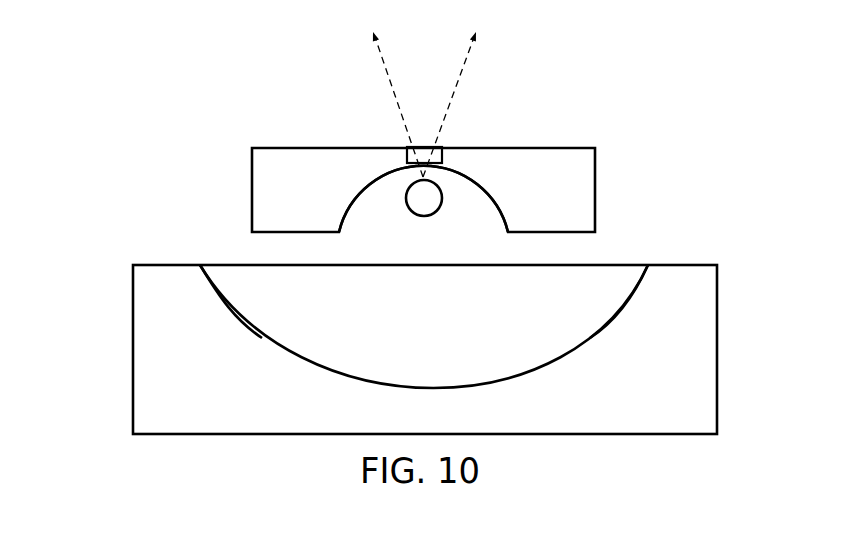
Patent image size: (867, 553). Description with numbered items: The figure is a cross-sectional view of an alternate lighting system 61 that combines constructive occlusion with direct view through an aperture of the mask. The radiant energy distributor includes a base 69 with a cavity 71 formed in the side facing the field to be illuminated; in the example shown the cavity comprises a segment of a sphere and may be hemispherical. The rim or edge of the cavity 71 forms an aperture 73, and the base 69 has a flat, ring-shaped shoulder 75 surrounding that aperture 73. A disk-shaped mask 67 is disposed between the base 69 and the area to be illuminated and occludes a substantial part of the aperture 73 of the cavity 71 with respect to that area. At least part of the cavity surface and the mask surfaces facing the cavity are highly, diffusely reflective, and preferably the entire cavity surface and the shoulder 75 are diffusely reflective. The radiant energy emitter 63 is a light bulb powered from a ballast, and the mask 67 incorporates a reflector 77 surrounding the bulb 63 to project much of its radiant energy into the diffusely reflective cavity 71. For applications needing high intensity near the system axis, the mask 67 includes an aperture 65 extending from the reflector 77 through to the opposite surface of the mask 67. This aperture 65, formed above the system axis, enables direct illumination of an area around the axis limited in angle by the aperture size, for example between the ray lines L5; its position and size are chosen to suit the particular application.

The lighting system 61 is at (146, 112).
The radiant energy emitter 63 is at (400, 222).
The aperture 65 is at (374, 131).
The mask 67 is at (473, 132).
The base 69 is at (475, 300).
The cavity 71 is at (491, 346).
The aperture 73 is at (197, 252).
The shoulder 75 is at (676, 260).
The reflector 77 is at (455, 155).
The ray lines L5 is at (432, 88).